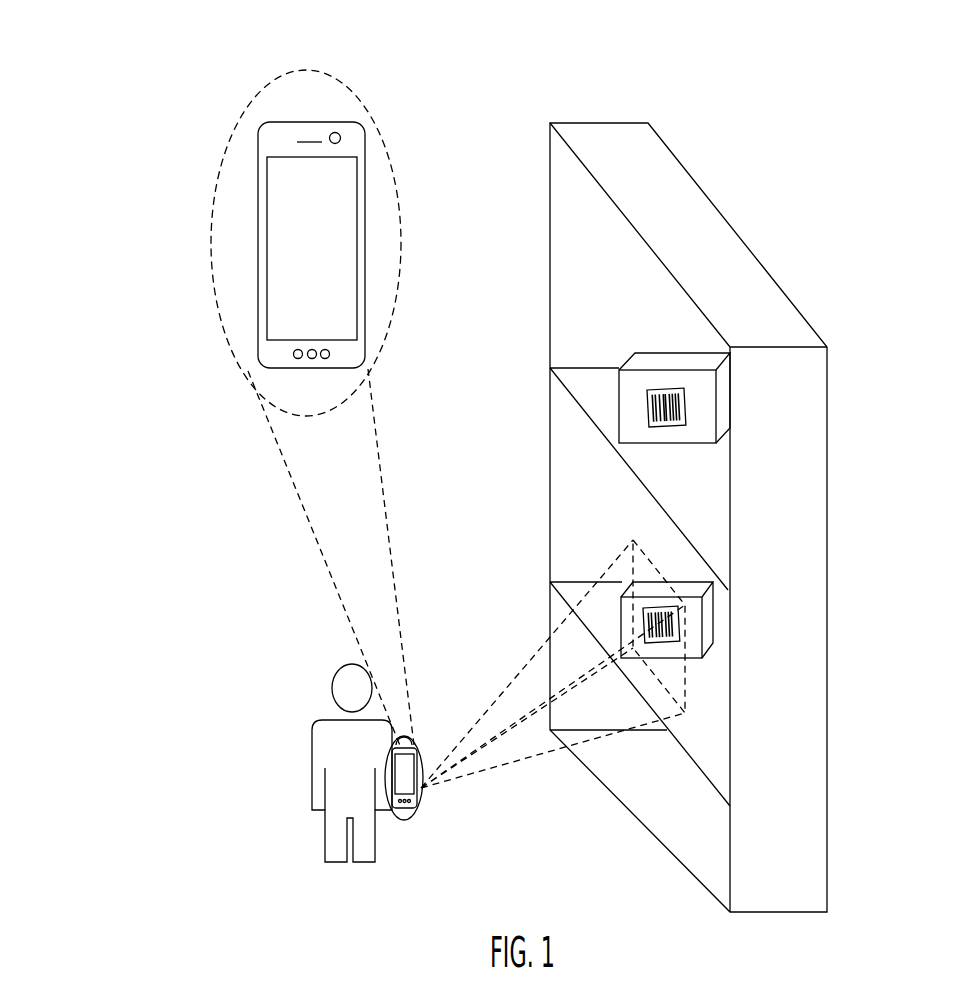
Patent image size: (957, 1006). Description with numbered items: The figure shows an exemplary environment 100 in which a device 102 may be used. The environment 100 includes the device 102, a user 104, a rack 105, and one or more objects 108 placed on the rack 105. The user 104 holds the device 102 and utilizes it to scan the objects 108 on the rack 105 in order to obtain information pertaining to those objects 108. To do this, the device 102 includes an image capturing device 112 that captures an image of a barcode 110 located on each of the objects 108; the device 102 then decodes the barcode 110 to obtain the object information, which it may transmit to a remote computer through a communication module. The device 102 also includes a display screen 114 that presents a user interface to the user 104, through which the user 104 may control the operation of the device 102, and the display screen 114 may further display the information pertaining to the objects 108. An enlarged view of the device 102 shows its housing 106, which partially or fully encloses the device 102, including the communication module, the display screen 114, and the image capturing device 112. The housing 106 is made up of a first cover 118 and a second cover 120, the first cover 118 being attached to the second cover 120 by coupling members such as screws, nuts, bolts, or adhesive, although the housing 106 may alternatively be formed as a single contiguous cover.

The exemplary environment 100 is at (148, 85).
The device 102 is at (423, 800).
The user 104 is at (332, 688).
The rack 105 is at (782, 288).
The housing 106 is at (258, 280).
The objects 108 is at (620, 368).
The barcode 110 is at (650, 418).
The image capturing device 112 is at (348, 128).
The display screen 114 is at (345, 245).
The first cover 118 is at (258, 230).
The second cover 120 is at (272, 368).